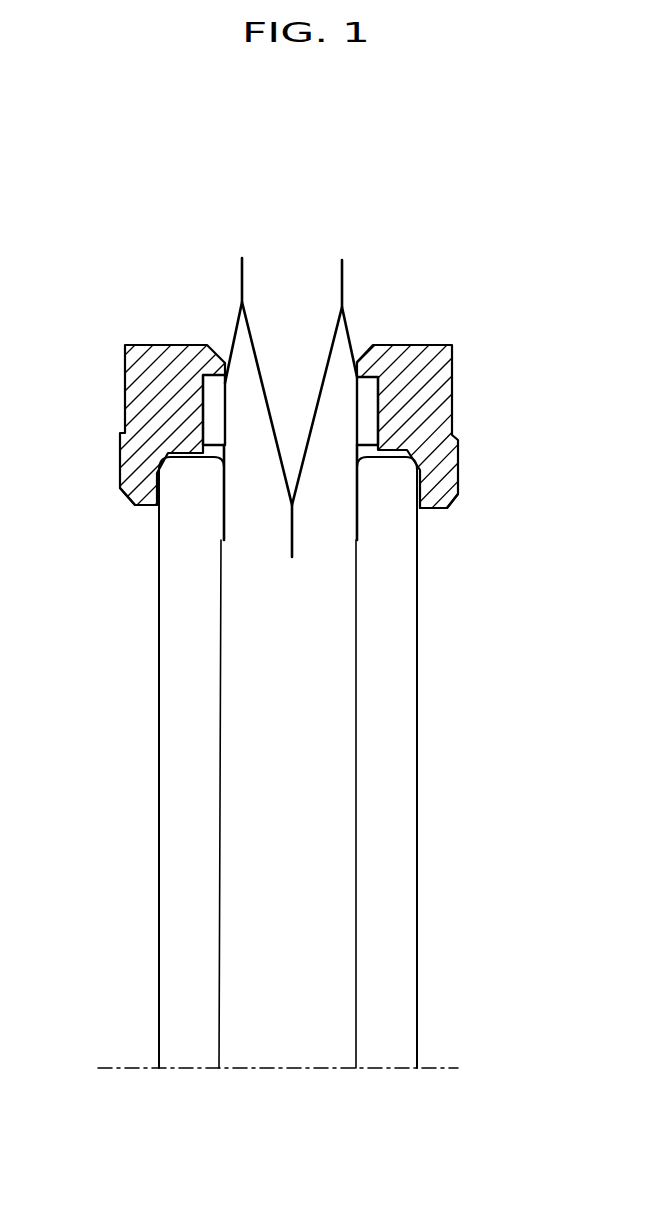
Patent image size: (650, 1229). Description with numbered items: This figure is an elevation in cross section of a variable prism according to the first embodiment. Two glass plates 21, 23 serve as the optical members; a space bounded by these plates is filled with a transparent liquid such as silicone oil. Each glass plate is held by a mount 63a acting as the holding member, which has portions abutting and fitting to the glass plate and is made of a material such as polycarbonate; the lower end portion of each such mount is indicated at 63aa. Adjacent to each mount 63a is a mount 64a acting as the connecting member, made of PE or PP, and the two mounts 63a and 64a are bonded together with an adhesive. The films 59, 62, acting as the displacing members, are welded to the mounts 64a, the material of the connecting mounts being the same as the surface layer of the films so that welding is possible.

The glass plate 21 is at (163, 788).
The glass plate 23 is at (410, 785).
The film 59 is at (240, 283).
The film 62 is at (342, 278).
The mount 63a is at (170, 350).
The holder member tip end 63aa is at (137, 503).
The mount 64a is at (203, 415).